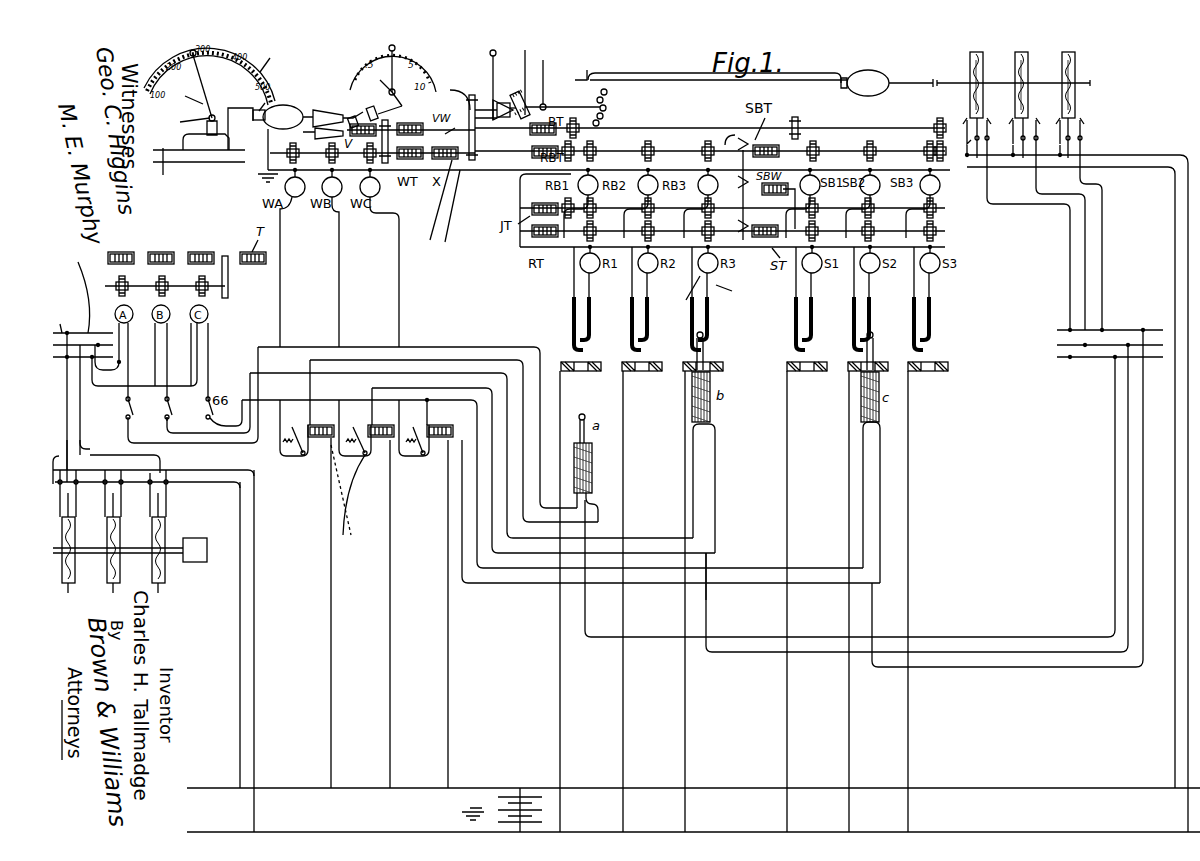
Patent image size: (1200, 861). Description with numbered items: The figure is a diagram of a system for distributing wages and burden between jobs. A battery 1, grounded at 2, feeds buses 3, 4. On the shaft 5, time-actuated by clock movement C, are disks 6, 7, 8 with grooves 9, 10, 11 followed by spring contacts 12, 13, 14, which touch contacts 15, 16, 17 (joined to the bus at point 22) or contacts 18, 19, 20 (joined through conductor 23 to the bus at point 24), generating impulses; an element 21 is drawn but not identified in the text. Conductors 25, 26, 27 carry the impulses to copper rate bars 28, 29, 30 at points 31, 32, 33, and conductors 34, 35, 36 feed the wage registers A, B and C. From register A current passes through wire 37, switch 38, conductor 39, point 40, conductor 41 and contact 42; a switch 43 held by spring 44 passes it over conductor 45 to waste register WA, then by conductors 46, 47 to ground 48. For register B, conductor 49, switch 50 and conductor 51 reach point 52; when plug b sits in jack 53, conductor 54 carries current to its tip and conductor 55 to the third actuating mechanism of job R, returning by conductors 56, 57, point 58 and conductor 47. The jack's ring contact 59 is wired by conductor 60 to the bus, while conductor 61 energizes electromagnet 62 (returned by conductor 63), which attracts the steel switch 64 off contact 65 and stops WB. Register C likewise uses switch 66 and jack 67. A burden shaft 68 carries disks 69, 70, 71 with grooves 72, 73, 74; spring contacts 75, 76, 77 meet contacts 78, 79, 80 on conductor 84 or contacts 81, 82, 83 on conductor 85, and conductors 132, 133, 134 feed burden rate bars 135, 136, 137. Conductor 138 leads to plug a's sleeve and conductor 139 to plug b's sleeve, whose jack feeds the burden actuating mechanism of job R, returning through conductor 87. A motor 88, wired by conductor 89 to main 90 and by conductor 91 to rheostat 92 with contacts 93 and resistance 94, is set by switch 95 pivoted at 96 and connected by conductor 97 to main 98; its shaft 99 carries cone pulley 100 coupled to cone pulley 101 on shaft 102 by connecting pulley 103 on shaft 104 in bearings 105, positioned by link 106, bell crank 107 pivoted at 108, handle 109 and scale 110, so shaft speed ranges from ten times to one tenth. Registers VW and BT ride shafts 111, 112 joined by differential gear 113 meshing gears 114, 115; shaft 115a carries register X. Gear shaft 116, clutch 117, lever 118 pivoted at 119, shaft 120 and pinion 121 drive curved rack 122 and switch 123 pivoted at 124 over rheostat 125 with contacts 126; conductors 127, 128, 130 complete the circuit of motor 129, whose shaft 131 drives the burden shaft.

The battery 1 is at (513, 802).
The ground 2 is at (464, 815).
The bus 3 is at (584, 788).
The bus 4 is at (395, 820).
The shaft 5 is at (138, 554).
The disk 6 is at (64, 595).
The disk 7 is at (110, 595).
The disk 8 is at (164, 595).
The groove 9 is at (74, 570).
The groove 10 is at (120, 578).
The groove 11 is at (164, 568).
The spring contact 12 is at (76, 497).
The spring contact 13 is at (122, 497).
The spring contact 14 is at (166, 497).
The contact 15 is at (56, 470).
The contact 16 is at (96, 514).
The contact 17 is at (144, 514).
The contact 18 is at (88, 483).
The contact 19 is at (132, 483).
The contact 20 is at (170, 490).
The conductor 21 is at (214, 484).
The point 22 is at (240, 788).
The conductor 23 is at (208, 476).
The point 24 is at (256, 824).
The conductor 25 is at (55, 449).
The conductor 26 is at (78, 440).
The conductor 27 is at (92, 390).
The bar 28 is at (58, 317).
The bar 29 is at (58, 407).
The bar 30 is at (82, 374).
The point 31 is at (83, 337).
The point 32 is at (74, 297).
The point 33 is at (96, 262).
The conductor 34 is at (106, 342).
The conductor 35 is at (139, 361).
The conductor 36 is at (194, 356).
The wire 37 is at (144, 354).
The switch 38 is at (139, 408).
The conductor 39 is at (170, 455).
The point 40 is at (288, 308).
The conductor 41 is at (306, 352).
The contact 42 is at (288, 436).
The switch 43 is at (328, 438).
The spring 44 is at (290, 456).
The conductor 45 is at (276, 314).
The conductor 46 is at (268, 196).
The conductor 47 is at (494, 176).
The ground 48 is at (258, 184).
The conductor 49 is at (164, 348).
The switch 50 is at (179, 407).
The conductor 51 is at (180, 426).
The point 52 is at (354, 374).
The jack 53 is at (704, 350).
The conductor 54 is at (450, 350).
The conductor 55 is at (732, 291).
The conductor 56 is at (772, 238).
The conductor 57 is at (558, 254).
The point 58 is at (518, 174).
The ring contact 59 is at (690, 376).
The conductor 60 is at (694, 432).
The conductor 61 is at (714, 484).
The electromagnet 62 is at (386, 438).
The conductor 63 is at (388, 674).
The switch 64 is at (356, 495).
The contact 65 is at (344, 502).
The switch 66 is at (681, 288).
The jack 67 is at (862, 338).
The shaft 68 is at (1092, 80).
The disk 69 is at (970, 66).
The disk 70 is at (1026, 62).
The disk 71 is at (1074, 62).
The groove 72 is at (972, 92).
The groove 73 is at (1020, 92).
The groove 74 is at (1064, 94).
The spring contact 75 is at (966, 130).
The spring contact 76 is at (1013, 134).
The spring contact 77 is at (1072, 130).
The contact 78 is at (992, 164).
The contact 79 is at (1045, 132).
The contact 80 is at (1082, 142).
The contact 81 is at (964, 165).
The contact 82 is at (1014, 167).
The contact 83 is at (1056, 166).
The conductor 84 is at (1160, 154).
The conductor 85 is at (1170, 188).
The conductor 87 is at (727, 135).
The motor 88 is at (266, 125).
The conductor 89 is at (240, 129).
The electric main 90 is at (199, 164).
The conductor 91 is at (250, 101).
The rheostat 92 is at (271, 58).
The contacts 93 is at (264, 80).
The resistance 94 is at (190, 101).
The switch 95 is at (208, 100).
The pivot 96 is at (187, 123).
The conductor 97 is at (206, 135).
The electric main 98 is at (158, 165).
The shaft 99 is at (290, 104).
The cone pulley 100 is at (330, 109).
The cone pulley 101 is at (317, 131).
The shaft 102 is at (352, 100).
The connecting pulley 103 is at (313, 136).
The shaft 104 is at (352, 110).
The bearings 105 is at (379, 106).
The link 106 is at (410, 122).
The bell crank 107 is at (386, 91).
The pivot 108 is at (416, 92).
The handle 109 is at (412, 52).
The scale 110 is at (463, 85).
The shaft 111 is at (411, 120).
The shaft 112 is at (481, 118).
The differential gear 113 is at (449, 133).
The gear 114 is at (472, 122).
The gear 115 is at (463, 206).
The shaft 115a is at (444, 209).
The shaft 116 is at (488, 79).
The clutch 117 is at (510, 94).
The lever 118 is at (526, 76).
The pivot 119 is at (528, 86).
The shaft 120 is at (497, 114).
The pinion 121 is at (562, 113).
The curved rack 122 is at (538, 98).
The switch 123 is at (586, 100).
The pivot 124 is at (589, 65).
The rheostat 125 is at (613, 114).
The contacts 126 is at (617, 89).
The conductor 127 is at (559, 72).
The conductor 128 is at (714, 67).
The motor 129 is at (862, 74).
The conductor 130 is at (704, 68).
The shaft 131 is at (890, 82).
The conductor 132 is at (1070, 255).
The conductor 133 is at (1088, 244).
The conductor 134 is at (1104, 280).
The rate bar 135 is at (1060, 326).
The rate bar 136 is at (1058, 345).
The rate bar 137 is at (1074, 360).
The conductor 138 is at (1114, 396).
The conductor 139 is at (1130, 472).